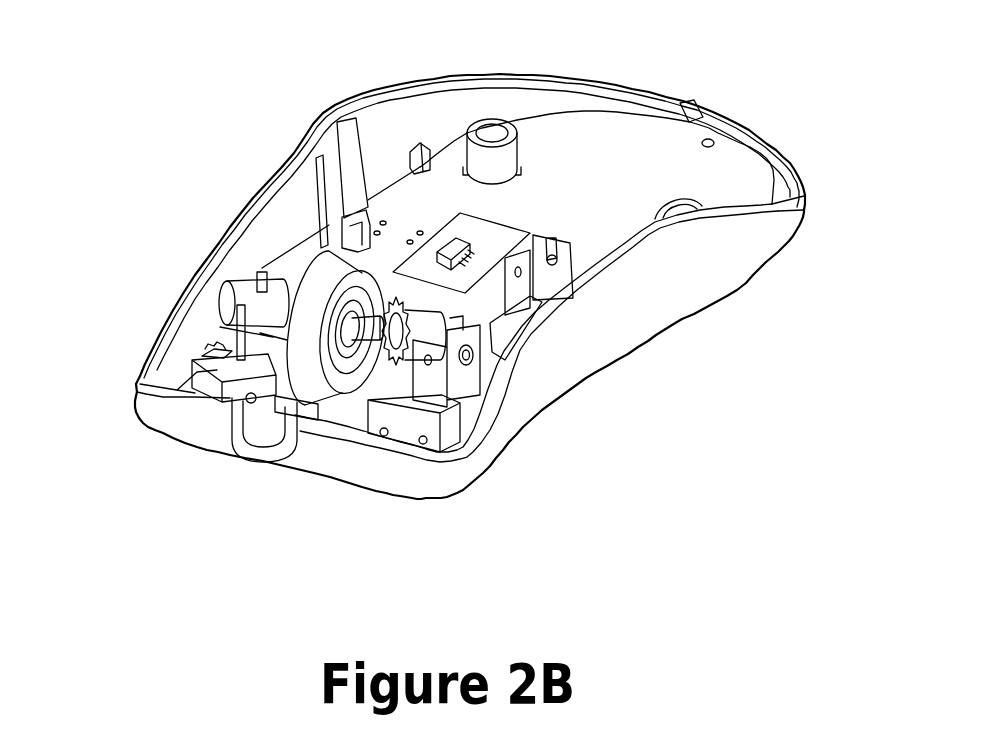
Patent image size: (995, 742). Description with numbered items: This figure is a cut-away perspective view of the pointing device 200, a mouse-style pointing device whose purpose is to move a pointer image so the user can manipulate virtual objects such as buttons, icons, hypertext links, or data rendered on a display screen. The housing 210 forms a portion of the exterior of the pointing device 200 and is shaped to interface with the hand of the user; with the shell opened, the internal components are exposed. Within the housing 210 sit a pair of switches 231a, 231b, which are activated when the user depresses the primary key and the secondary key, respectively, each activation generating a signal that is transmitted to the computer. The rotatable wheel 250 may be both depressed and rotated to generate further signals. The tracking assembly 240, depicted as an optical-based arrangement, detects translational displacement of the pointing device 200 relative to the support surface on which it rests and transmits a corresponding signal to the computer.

The pointing device 200 is at (416, 311).
The housing 210 is at (692, 298).
The switch 231a is at (421, 398).
The switch 231b is at (238, 365).
The tracking assembly 240 is at (516, 222).
The rotatable wheel 250 is at (348, 262).